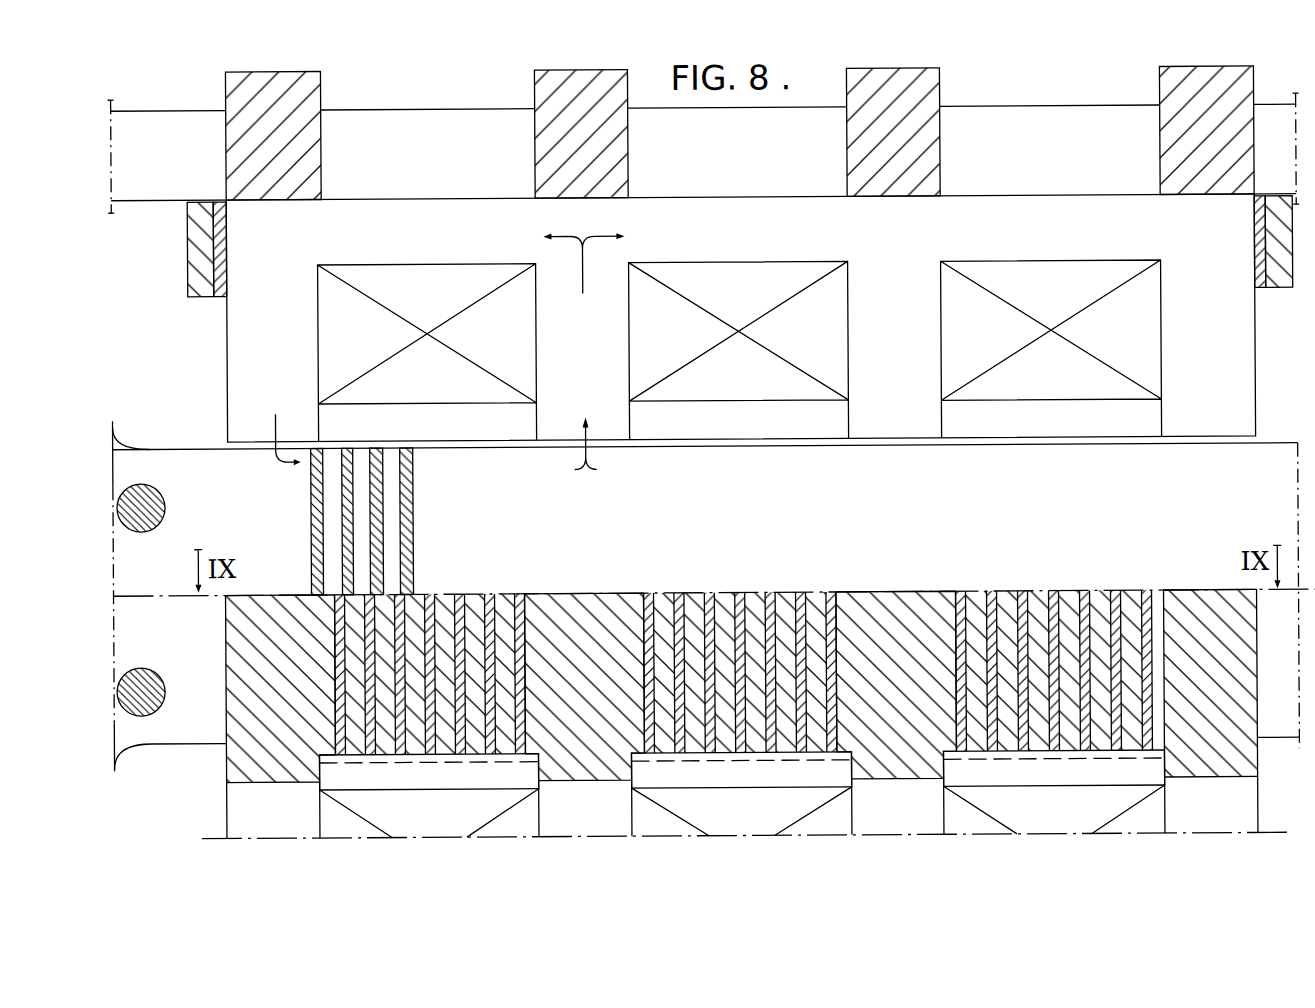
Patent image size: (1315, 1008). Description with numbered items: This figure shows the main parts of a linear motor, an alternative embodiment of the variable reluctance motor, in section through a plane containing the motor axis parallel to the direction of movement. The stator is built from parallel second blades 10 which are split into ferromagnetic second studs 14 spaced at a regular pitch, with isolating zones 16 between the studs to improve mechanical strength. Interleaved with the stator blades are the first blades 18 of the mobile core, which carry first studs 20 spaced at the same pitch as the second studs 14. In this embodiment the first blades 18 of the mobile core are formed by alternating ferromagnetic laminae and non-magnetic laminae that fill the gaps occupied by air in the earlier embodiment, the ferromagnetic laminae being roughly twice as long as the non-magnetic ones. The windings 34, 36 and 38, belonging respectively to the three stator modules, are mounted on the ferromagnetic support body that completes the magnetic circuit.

The stator second blades 10 is at (297, 608).
The second studs 14 is at (383, 646).
The isolating zones 16 is at (368, 696).
The first blades 18 is at (208, 462).
The first studs 20 is at (360, 543).
The winding 34 is at (408, 276).
The winding 36 is at (762, 286).
The winding 38 is at (1043, 287).